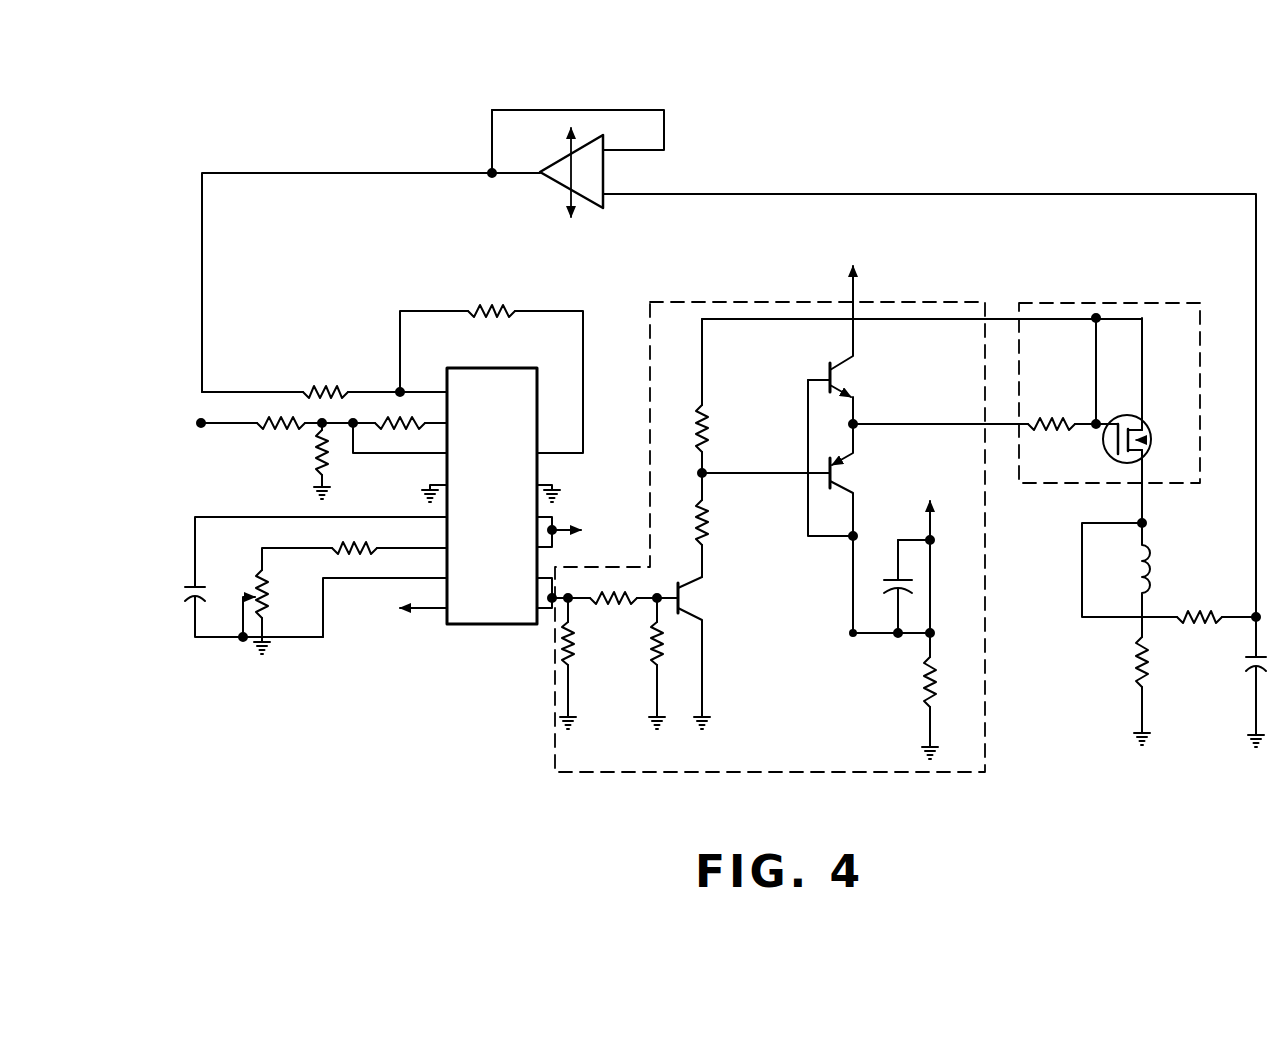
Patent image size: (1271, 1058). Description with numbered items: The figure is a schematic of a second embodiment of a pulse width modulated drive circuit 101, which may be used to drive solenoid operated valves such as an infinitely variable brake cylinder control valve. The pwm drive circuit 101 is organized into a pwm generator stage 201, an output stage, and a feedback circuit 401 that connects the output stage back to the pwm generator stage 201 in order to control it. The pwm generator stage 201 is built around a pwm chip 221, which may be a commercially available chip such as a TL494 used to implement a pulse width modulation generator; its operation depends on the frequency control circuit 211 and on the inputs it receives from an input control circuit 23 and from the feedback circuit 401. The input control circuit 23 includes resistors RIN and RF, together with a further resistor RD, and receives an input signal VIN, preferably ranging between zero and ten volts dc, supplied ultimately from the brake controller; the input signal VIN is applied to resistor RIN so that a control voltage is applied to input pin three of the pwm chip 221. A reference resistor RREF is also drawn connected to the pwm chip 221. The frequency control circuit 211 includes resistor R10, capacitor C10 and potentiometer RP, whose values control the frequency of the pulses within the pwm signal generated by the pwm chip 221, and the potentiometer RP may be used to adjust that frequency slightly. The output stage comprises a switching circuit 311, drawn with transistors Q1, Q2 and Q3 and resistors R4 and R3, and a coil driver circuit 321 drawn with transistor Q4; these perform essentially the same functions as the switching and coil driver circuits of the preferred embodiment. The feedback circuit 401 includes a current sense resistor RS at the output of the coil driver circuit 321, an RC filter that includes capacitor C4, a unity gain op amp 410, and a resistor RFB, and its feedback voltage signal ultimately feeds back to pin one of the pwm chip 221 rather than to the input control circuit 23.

The pulse width modulated drive circuit 101 is at (270, 158).
The feedback circuit 401 is at (700, 174).
The unity gain op amp 410 is at (554, 185).
The pwm generator stage 201 is at (383, 360).
The reference resistor RREF is at (491, 306).
The resistor RFB is at (325, 389).
The input signal VIN is at (193, 424).
The resistor RIN is at (275, 432).
The input control circuit 23 is at (245, 478).
The divider resistor RD is at (315, 450).
The resistor RF is at (395, 436).
The pwm chip 221 is at (490, 617).
The capacitor C10 is at (190, 583).
The resistor R10 is at (338, 549).
The potentiometer RP is at (281, 612).
The frequency control circuit 211 is at (322, 647).
The switching circuit 311 is at (770, 300).
The resistor R4 is at (708, 430).
The resistor R3 is at (708, 526).
The transistor Q1 is at (838, 378).
The transistor Q2 is at (838, 473).
The transistor Q3 is at (698, 598).
The coil driver circuit 321 is at (1103, 300).
The MOSFET transistor Q4 is at (1105, 452).
The current sense resistor RS is at (1135, 656).
The capacitor C4 is at (1252, 662).